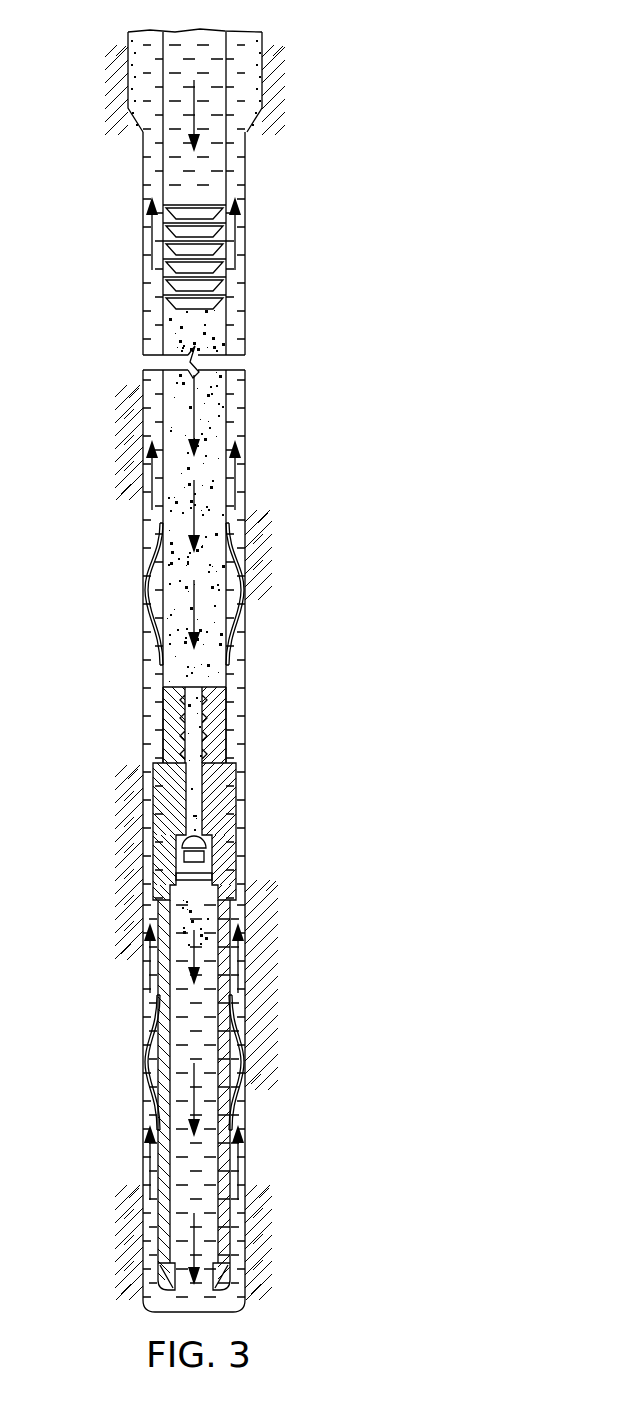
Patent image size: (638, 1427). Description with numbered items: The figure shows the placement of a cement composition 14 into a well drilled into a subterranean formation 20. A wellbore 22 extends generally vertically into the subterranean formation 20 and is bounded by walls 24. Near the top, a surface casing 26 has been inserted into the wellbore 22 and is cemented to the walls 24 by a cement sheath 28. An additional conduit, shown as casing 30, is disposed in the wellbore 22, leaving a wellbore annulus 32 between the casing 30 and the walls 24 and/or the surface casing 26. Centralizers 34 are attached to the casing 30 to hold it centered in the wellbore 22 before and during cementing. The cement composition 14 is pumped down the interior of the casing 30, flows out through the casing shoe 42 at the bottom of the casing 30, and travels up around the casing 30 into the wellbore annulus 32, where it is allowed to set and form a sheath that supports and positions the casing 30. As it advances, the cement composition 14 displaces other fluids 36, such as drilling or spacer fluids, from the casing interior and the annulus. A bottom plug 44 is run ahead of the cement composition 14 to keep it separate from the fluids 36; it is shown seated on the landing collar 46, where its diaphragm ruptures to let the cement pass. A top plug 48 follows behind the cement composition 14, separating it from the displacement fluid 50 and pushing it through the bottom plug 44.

The cement composition 14 is at (195, 405).
The subterranean formation 20 is at (360, 705).
The wellbore 22 is at (246, 540).
The walls 24 is at (231, 297).
The surface casing 26 is at (253, 38).
The cement sheath 28 is at (258, 68).
The casing 30 is at (228, 433).
The wellbore annulus 32 is at (152, 515).
The centralizers 34 is at (148, 1042).
The fluids 36 is at (194, 922).
The casing shoe 42 is at (148, 1220).
The bottom plug 44 is at (160, 716).
The landing collar 46 is at (148, 790).
The top plug 48 is at (163, 275).
The displacement fluid 50 is at (193, 104).